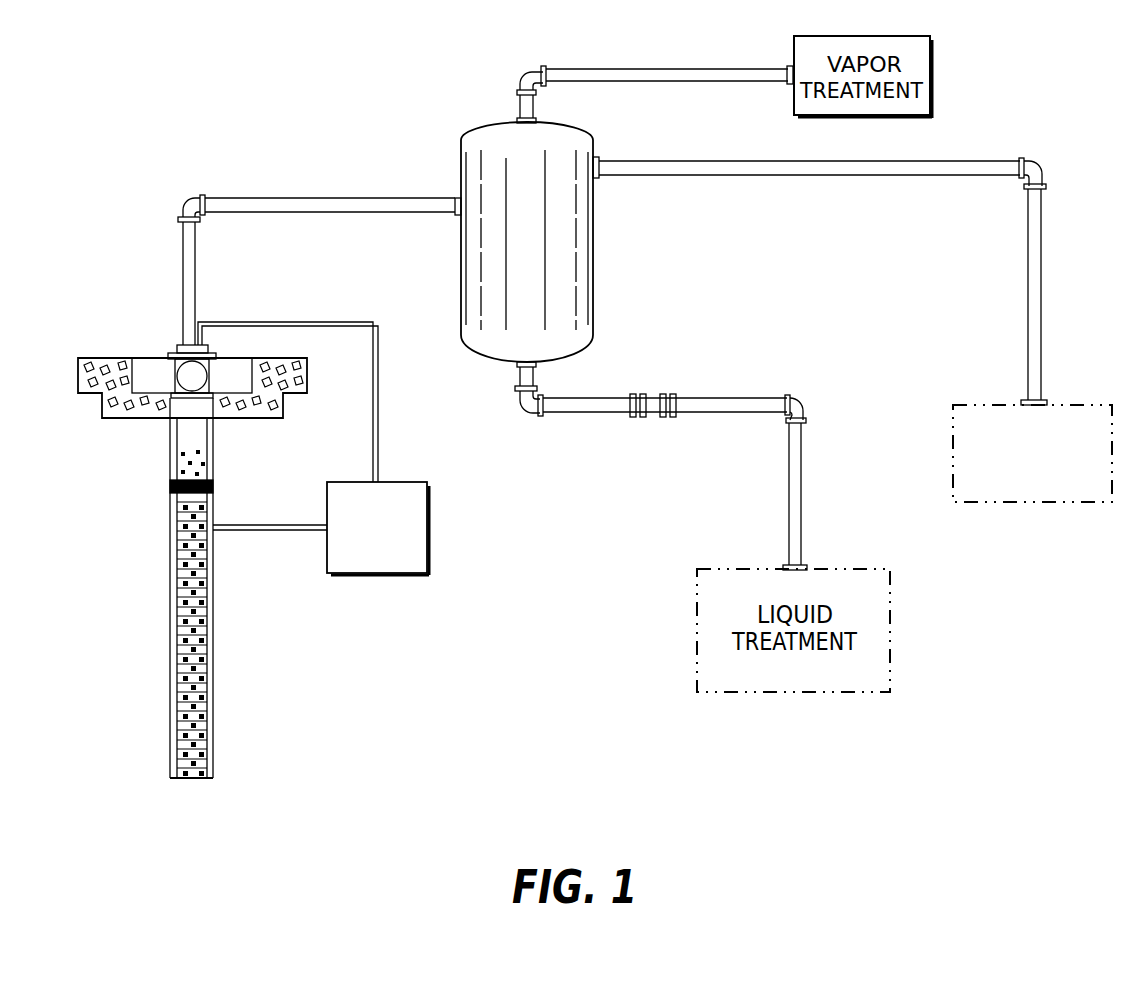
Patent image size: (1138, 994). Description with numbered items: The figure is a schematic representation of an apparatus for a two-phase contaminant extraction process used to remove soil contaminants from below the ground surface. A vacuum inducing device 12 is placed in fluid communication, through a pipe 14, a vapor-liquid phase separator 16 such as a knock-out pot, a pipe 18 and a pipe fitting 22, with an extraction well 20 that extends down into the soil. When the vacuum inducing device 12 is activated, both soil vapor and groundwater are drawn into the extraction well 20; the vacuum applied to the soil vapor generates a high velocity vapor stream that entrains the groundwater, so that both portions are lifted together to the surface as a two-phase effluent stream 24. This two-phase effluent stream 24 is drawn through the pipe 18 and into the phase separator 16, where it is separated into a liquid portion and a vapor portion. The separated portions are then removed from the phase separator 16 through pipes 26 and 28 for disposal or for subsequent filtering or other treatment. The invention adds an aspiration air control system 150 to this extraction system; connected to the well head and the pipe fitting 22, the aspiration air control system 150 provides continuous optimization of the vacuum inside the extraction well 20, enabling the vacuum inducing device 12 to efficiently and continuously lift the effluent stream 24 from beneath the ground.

The vacuum inducing device 12 is at (962, 406).
The pipe 14 is at (700, 160).
The vapor-liquid phase separator 16 is at (486, 131).
The pipe 18 is at (196, 255).
The extraction well 20 is at (220, 588).
The pipe fitting 22 is at (187, 372).
The two-phase effluent stream 24 is at (183, 620).
The pipe 26 is at (596, 413).
The pipe 28 is at (637, 82).
The aspiration air control system 150 is at (521, 523).